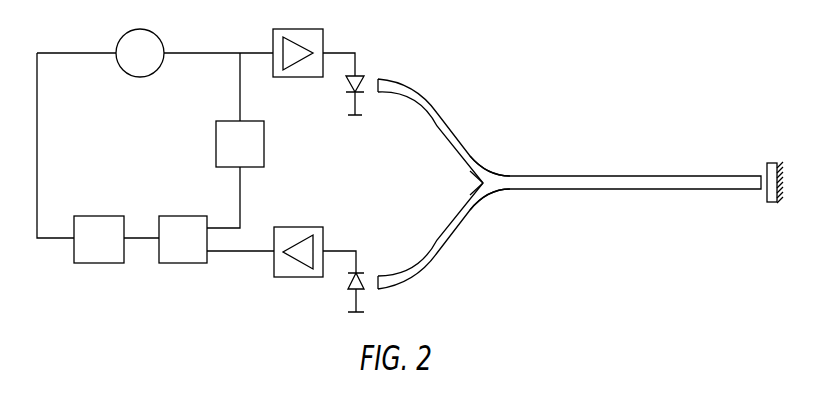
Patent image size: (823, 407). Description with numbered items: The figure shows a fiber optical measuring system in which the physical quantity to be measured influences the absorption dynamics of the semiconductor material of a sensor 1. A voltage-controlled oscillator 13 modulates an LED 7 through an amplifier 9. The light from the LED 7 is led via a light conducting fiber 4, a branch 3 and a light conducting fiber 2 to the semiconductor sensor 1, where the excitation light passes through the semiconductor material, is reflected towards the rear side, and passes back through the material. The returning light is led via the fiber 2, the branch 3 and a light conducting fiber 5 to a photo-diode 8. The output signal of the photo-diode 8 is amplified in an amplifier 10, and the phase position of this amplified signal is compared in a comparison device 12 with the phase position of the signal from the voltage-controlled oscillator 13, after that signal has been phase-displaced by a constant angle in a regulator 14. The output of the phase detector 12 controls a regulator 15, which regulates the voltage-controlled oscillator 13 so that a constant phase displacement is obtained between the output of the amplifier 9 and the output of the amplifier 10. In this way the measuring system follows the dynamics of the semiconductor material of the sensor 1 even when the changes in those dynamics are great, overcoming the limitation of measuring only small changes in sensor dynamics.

The semiconductor sensor 1 is at (770, 204).
The light conducting fiber 2 is at (628, 175).
The branch 3 is at (490, 170).
The light conducting fiber 4 is at (445, 122).
The light conducting fiber 5 is at (450, 240).
The LED 7 is at (363, 75).
The photo-diode 8 is at (345, 296).
The amplifier 9 is at (304, 27).
The amplifier 10 is at (305, 227).
The comparison device 12 is at (178, 215).
The voltage-controlled oscillator 13 is at (147, 27).
The regulator 14 is at (265, 143).
The regulator 15 is at (98, 215).